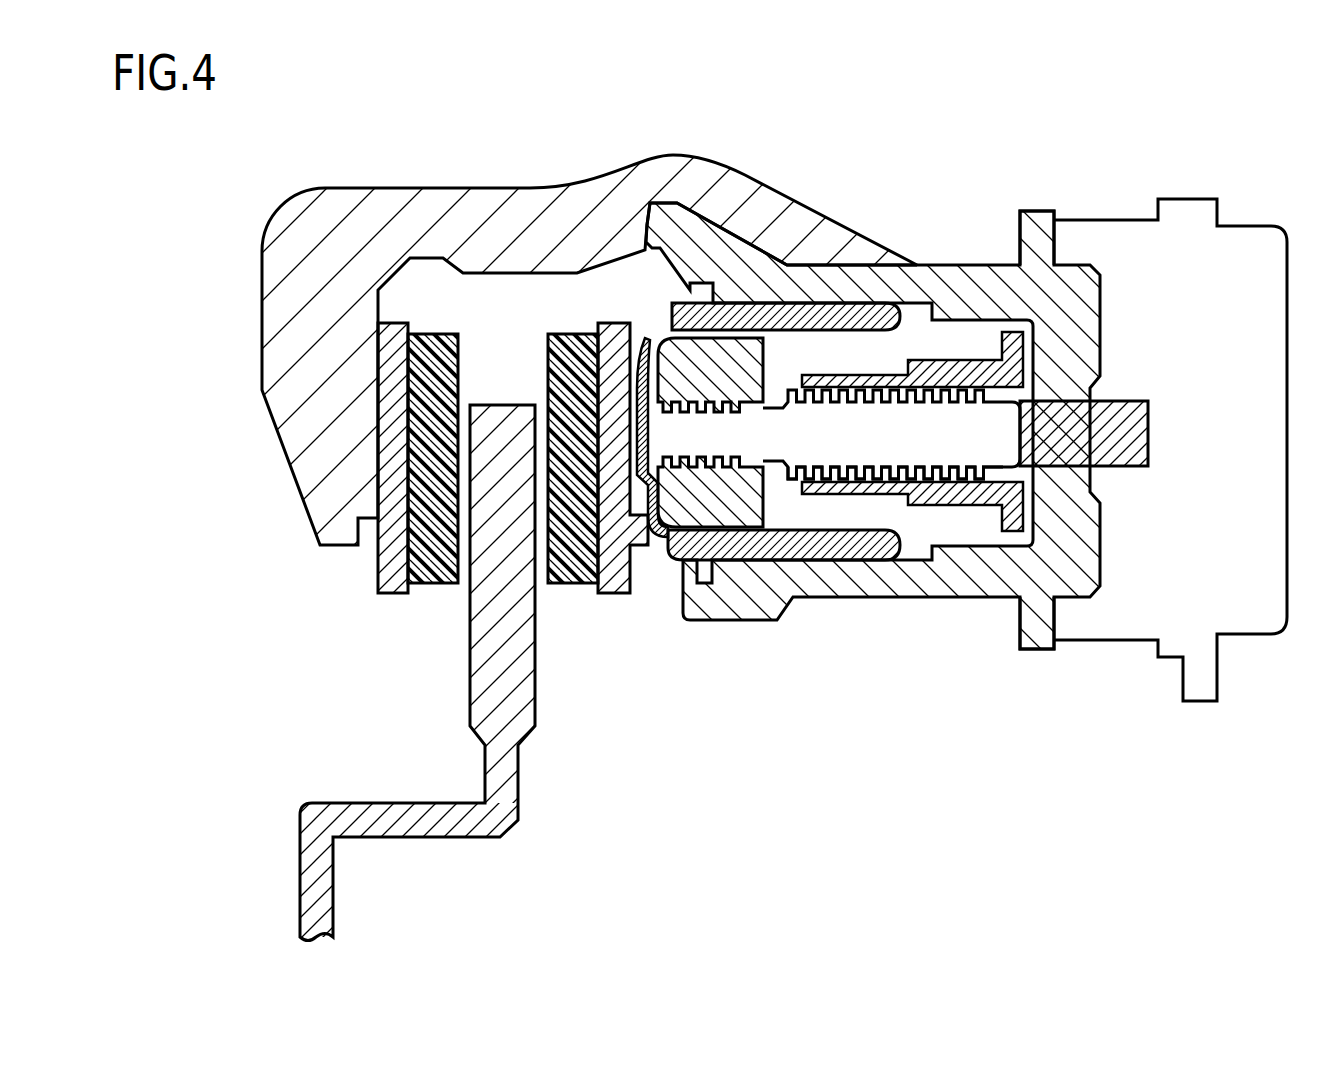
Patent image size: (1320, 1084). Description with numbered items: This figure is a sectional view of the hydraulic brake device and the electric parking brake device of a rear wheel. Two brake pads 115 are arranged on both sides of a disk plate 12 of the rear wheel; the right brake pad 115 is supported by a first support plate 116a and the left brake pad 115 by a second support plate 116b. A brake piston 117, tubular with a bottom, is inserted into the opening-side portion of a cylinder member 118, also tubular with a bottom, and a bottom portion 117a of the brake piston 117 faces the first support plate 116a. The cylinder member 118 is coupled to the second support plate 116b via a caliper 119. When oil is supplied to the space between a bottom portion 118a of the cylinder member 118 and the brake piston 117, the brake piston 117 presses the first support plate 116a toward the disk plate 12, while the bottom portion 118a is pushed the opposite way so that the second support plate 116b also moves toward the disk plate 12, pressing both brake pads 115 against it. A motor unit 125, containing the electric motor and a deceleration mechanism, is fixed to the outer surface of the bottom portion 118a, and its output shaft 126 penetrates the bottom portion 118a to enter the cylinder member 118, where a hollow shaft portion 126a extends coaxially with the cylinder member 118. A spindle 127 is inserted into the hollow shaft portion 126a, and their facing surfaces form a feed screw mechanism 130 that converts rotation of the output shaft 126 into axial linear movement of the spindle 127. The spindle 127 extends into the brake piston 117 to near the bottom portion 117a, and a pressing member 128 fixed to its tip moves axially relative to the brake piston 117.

The disk plate 12 is at (472, 678).
The brake pad 115 is at (440, 578).
The first support plate 116a is at (618, 600).
The second support plate 116b is at (378, 580).
The brake piston 117 is at (822, 310).
The bottom portion of the brake piston 117a is at (648, 400).
The cylinder member 118 is at (958, 585).
The bottom portion of the cylinder member 118a is at (1097, 321).
The caliper 119 is at (437, 215).
The motor unit 125 is at (1243, 225).
The output shaft 126 is at (1150, 433).
The hollow shaft portion 126a is at (963, 375).
The spindle 127 is at (897, 440).
The pressing member 128 is at (740, 500).
The feed screw mechanism 130 is at (855, 482).